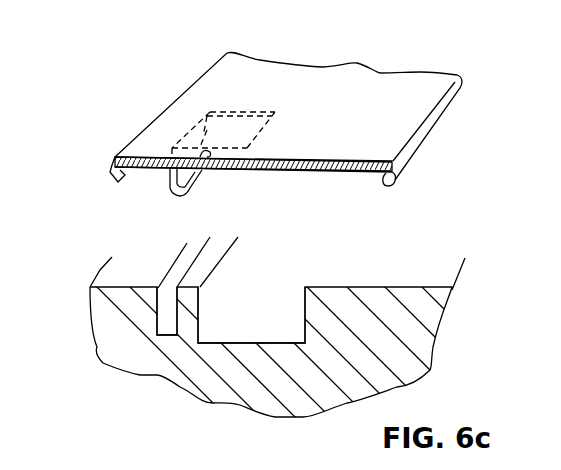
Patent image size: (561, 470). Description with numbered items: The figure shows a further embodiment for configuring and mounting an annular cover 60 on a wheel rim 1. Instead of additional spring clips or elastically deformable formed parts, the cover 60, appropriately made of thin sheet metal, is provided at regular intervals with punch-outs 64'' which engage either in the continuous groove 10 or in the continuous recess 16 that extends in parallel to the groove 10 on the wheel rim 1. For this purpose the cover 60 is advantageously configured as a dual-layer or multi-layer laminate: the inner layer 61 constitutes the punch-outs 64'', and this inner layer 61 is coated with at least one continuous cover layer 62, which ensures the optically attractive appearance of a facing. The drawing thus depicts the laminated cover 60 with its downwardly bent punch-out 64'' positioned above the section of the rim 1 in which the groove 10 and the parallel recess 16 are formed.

The wheel rim 1 is at (426, 345).
The continuous groove 10 is at (240, 273).
The continuous recess 16 is at (163, 299).
The annular cover 60 is at (428, 87).
The inner layer 61 is at (302, 172).
The cover layer 62 is at (150, 156).
The punch-out 64'' is at (136, 201).